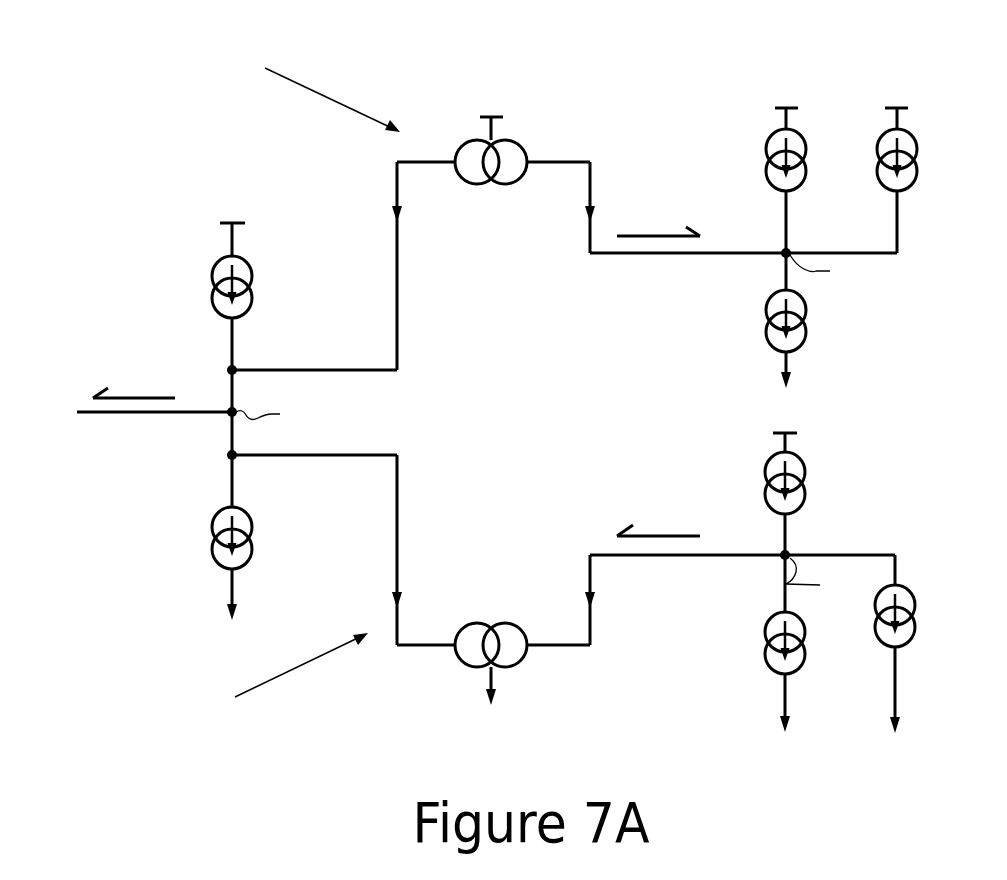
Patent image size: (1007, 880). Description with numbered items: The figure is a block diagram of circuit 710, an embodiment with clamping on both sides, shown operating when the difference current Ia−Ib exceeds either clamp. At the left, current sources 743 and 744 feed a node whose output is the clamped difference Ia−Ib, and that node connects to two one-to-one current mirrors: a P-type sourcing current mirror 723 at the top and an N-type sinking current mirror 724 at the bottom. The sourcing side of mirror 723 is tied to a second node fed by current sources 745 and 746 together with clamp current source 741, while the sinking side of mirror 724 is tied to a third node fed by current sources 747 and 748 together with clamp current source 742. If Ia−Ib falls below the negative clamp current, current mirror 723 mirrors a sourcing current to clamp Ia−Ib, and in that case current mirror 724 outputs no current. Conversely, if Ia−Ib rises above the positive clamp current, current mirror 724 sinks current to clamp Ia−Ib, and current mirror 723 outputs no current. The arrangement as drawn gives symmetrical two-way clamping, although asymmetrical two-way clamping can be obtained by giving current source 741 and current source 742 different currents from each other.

The circuit 710 is at (497, 21).
The current mirror 723 is at (497, 185).
The current mirror 724 is at (497, 623).
The current source 741 is at (920, 141).
The current source 742 is at (925, 599).
The Ia current source 743 is at (215, 276).
The Ib current source 744 is at (215, 531).
The Ia current source 745 is at (768, 141).
The Ib current source 746 is at (768, 304).
The Ia current source 747 is at (767, 469).
The Ib current source 748 is at (767, 644).